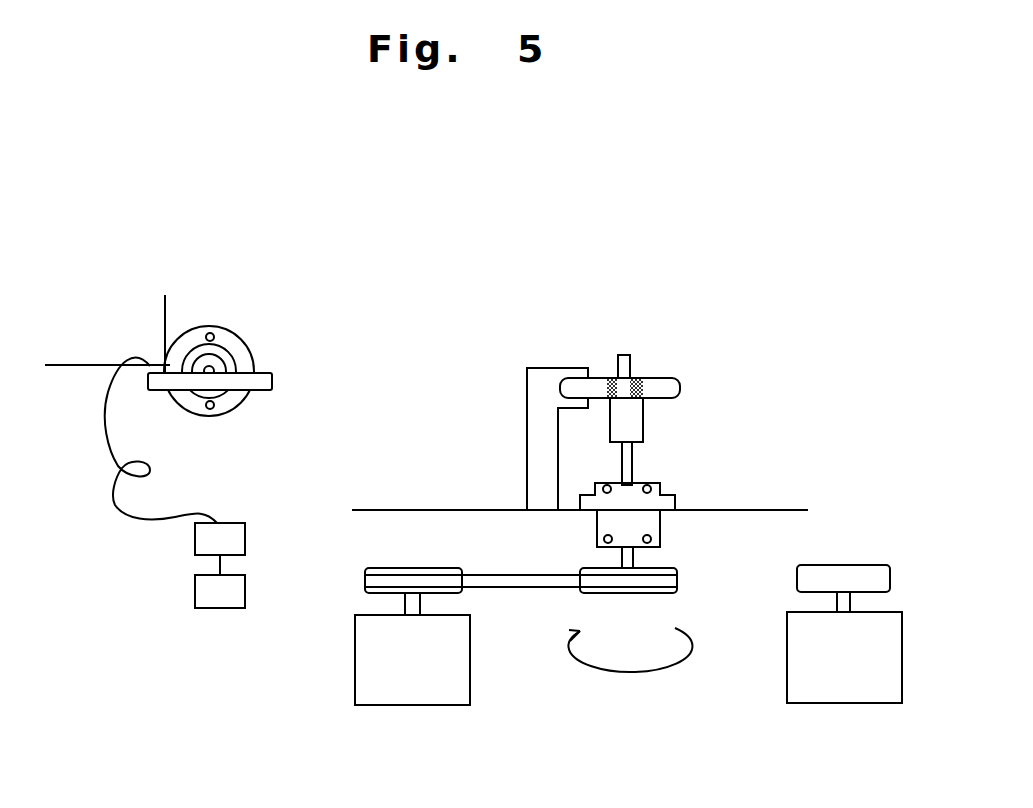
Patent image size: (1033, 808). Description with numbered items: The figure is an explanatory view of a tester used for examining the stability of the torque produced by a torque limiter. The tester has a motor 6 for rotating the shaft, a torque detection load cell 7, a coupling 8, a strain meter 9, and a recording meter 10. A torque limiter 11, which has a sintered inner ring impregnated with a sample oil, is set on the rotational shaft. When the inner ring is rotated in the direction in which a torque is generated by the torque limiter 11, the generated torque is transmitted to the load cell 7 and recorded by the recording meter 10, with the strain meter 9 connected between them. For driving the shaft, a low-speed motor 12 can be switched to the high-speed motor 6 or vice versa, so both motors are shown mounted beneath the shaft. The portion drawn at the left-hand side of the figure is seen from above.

The motor 6 is at (372, 663).
The torque detection load cell 7 is at (553, 375).
The coupling 8 is at (643, 410).
The strain meter 9 is at (212, 537).
The recording meter 10 is at (210, 593).
The torque limiter 11 is at (630, 427).
The low-speed motor 12 is at (810, 683).